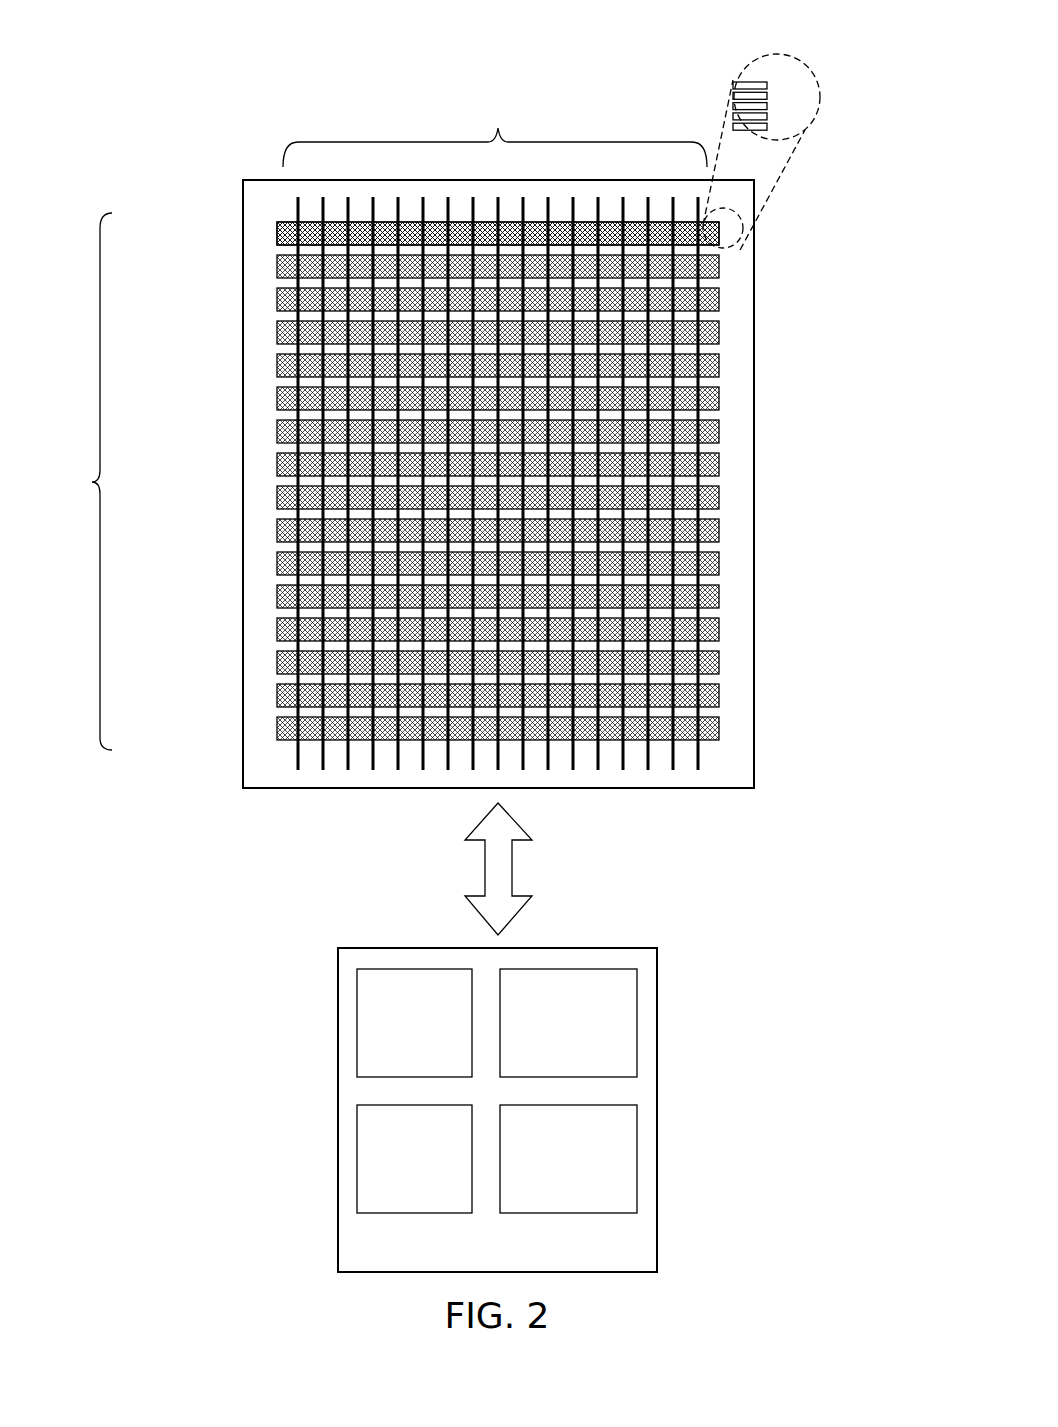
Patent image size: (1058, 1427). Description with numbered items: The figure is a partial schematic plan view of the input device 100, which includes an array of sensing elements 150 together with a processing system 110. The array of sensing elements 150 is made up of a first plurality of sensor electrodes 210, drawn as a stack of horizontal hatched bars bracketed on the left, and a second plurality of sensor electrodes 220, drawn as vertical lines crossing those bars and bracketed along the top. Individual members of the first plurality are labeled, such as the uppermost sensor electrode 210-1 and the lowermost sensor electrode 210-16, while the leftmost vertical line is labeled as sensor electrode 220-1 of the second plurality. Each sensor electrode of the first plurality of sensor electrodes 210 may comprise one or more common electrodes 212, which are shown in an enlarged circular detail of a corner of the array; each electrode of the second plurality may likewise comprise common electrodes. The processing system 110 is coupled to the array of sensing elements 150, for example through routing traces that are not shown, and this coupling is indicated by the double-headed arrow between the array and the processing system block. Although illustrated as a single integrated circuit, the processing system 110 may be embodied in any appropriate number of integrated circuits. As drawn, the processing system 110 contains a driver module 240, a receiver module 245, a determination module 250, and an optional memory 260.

The input device 100 is at (205, 108).
The array of sensing elements 150 is at (356, 200).
The first plurality of sensor electrodes 210 is at (92, 482).
The sensor electrode 210-1 is at (278, 231).
The sensor electrode 210-16 is at (278, 730).
The common electrodes 212 is at (767, 86).
The second plurality of sensor electrodes 220 is at (495, 434).
The sensor electrode 220-1 is at (298, 208).
The processing system 110 is at (613, 1251).
The driver module 240 is at (396, 1057).
The receiver module 245 is at (396, 1192).
The determination module 250 is at (550, 1192).
The optional memory 260 is at (550, 1057).